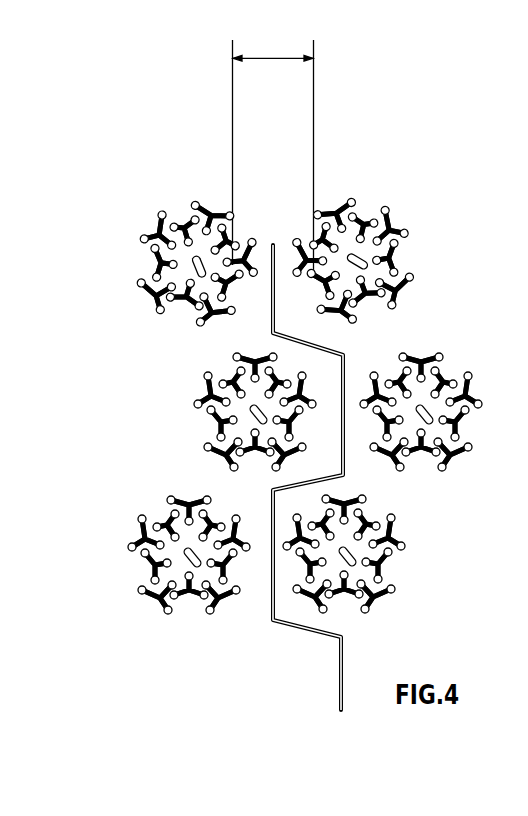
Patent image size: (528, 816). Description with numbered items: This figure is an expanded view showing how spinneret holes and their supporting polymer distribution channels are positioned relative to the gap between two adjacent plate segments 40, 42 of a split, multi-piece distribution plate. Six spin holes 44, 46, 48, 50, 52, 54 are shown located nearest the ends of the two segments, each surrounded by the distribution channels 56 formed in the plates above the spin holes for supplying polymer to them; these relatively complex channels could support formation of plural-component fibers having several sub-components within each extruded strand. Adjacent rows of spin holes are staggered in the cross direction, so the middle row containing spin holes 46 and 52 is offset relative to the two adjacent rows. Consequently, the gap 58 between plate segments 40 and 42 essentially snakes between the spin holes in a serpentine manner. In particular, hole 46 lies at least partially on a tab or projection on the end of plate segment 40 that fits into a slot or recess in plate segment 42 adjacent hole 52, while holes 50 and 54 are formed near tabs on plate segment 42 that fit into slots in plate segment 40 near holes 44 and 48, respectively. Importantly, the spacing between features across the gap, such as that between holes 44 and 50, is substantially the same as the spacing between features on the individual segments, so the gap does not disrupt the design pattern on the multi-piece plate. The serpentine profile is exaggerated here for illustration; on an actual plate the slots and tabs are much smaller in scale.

The plate segment 40 is at (107, 437).
The plate segment 42 is at (475, 534).
The spin hole 44 is at (183, 218).
The spin hole 46 is at (222, 423).
The spin hole 48 is at (188, 612).
The spin hole 50 is at (367, 247).
The spin hole 52 is at (427, 383).
The spin hole 54 is at (368, 555).
The distribution channels 56 is at (148, 272).
The gap 58 is at (341, 710).